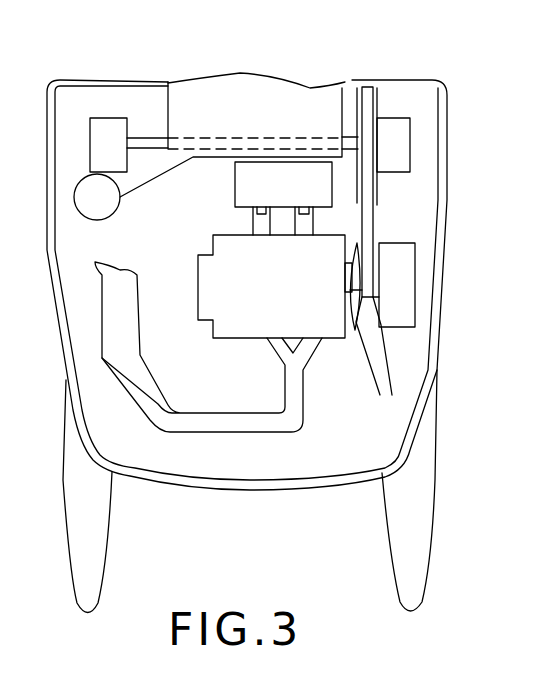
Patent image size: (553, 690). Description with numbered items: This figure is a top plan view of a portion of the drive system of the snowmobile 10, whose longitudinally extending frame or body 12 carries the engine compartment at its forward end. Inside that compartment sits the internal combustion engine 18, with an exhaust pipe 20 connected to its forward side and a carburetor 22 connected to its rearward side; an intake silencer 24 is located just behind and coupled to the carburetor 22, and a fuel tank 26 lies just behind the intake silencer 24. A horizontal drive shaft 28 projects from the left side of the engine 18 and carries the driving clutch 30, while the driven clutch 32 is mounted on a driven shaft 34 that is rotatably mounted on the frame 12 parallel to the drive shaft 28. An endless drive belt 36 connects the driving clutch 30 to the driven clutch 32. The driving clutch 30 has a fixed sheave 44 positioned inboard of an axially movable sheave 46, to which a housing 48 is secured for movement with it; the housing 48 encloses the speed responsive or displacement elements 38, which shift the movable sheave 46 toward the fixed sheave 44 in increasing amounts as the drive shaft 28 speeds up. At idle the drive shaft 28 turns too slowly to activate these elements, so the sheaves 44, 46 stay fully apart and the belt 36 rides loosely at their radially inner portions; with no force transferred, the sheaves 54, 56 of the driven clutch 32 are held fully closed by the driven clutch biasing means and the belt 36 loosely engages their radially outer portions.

The snowmobile 10 is at (477, 333).
The frame 12 is at (425, 370).
The internal combustion engine 18 is at (238, 338).
The exhaust pipe 20 is at (302, 393).
The carburetor 22 is at (253, 219).
The intake silencer 24 is at (242, 178).
The fuel tank 26 is at (166, 112).
The drive shaft 28 is at (352, 330).
The driving clutch 30 is at (418, 272).
The driven clutch 32 is at (412, 137).
The driven shaft 34 is at (344, 137).
The endless drive belt 36 is at (374, 220).
The speed responsive or displacement elements 38 is at (107, 118).
The fixed sheave 44 is at (348, 263).
The axially movable sheave 46 is at (376, 361).
The housing 48 is at (416, 306).
The driven clutch sheave 54 is at (358, 88).
The driven clutch sheave 56 is at (377, 100).